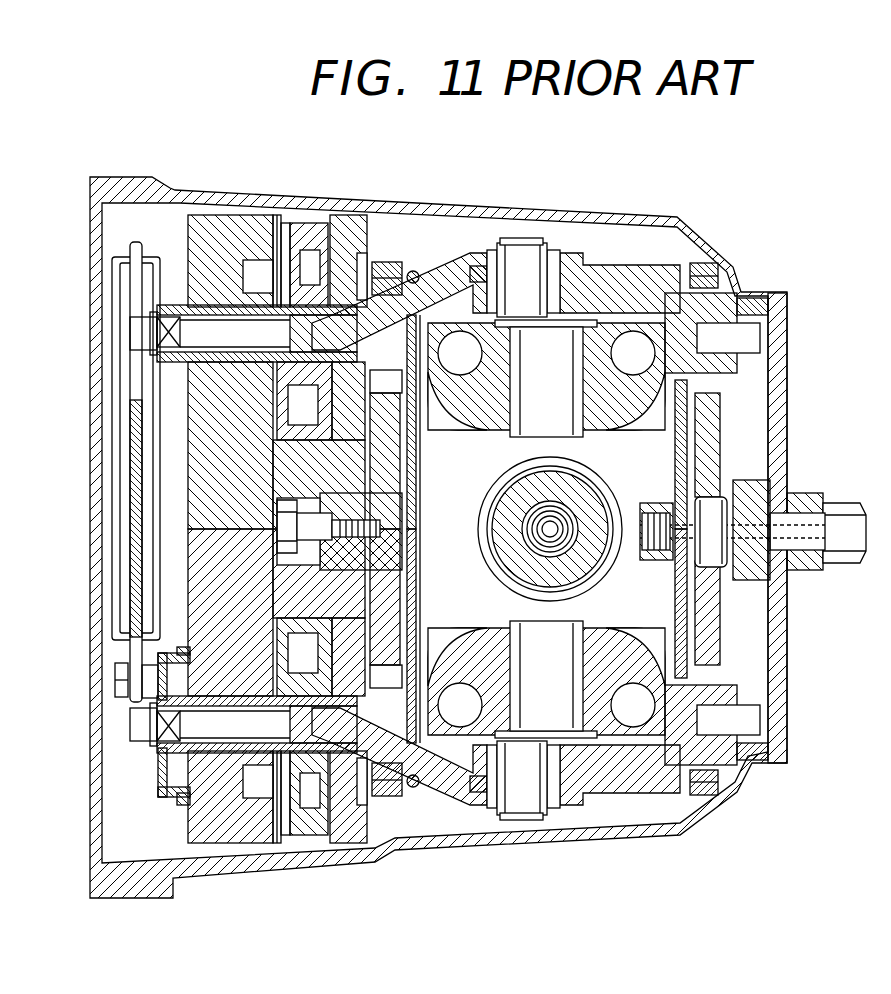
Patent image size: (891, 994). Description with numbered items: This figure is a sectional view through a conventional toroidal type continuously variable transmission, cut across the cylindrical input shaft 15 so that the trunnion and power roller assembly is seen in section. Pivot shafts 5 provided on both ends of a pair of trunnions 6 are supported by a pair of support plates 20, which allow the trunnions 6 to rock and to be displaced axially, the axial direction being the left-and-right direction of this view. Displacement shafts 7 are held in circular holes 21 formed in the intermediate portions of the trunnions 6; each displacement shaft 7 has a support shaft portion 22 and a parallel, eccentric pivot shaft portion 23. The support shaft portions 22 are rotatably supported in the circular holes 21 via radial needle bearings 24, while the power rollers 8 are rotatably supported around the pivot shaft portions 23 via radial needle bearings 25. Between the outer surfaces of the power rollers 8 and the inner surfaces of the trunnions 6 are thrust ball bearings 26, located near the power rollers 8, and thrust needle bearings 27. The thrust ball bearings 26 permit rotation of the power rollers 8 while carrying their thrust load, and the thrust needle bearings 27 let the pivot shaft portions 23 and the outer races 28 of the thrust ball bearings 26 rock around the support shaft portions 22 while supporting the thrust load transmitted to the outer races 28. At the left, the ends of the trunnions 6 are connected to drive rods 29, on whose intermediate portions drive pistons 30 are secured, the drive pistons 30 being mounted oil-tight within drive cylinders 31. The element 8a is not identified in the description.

The pivot shaft 5 is at (388, 262).
The trunnion 6 is at (685, 245).
The displacement shaft 7 is at (575, 262).
The power roller 8 is at (684, 410).
The flange wall 8a is at (700, 398).
The input shaft 15 is at (520, 510).
The support plate 20 is at (713, 612).
The circular hole 21 is at (480, 265).
The support shaft portion 22 is at (512, 245).
The pivot shaft portion 23 is at (537, 410).
The radial needle bearing 24 is at (548, 270).
The radial needle bearing 25 is at (468, 395).
The thrust ball bearing 26 is at (636, 380).
The thrust needle bearing 27 is at (622, 262).
The outer race 28 is at (662, 300).
The drive rod 29 is at (222, 320).
The drive piston 30 is at (312, 222).
The drive cylinder 31 is at (290, 225).